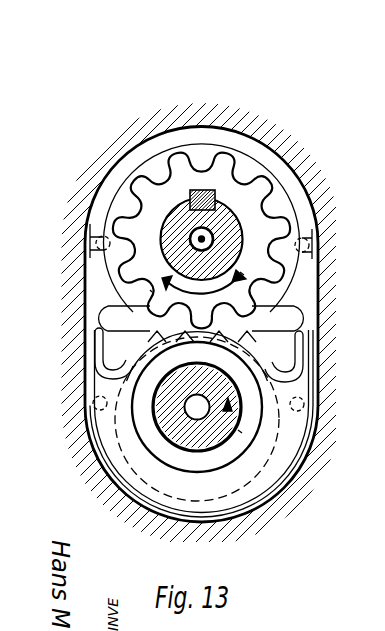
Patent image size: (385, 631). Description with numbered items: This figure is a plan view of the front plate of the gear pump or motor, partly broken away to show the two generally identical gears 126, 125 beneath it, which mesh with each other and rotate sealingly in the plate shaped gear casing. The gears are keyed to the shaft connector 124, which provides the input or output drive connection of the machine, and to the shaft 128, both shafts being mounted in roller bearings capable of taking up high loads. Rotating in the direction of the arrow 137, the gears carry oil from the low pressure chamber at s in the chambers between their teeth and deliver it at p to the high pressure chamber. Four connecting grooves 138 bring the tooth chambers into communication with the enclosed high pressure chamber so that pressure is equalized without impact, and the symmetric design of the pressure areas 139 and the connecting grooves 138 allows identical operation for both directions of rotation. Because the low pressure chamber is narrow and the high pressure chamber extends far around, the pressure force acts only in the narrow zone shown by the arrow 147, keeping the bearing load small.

The shaft connector 124 is at (154, 428).
The gear 125 is at (124, 338).
The gear 126 is at (182, 162).
The shaft 128 is at (196, 241).
The arrow 137 is at (242, 272).
The connecting grooves 138 is at (96, 245).
The pressure areas 139 is at (122, 367).
The arrow 147 is at (150, 290).